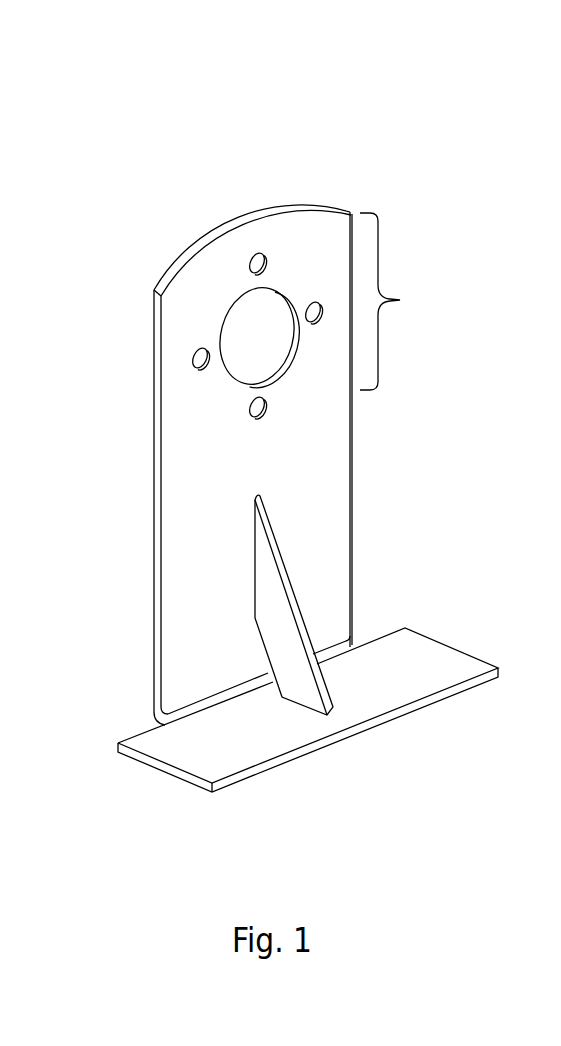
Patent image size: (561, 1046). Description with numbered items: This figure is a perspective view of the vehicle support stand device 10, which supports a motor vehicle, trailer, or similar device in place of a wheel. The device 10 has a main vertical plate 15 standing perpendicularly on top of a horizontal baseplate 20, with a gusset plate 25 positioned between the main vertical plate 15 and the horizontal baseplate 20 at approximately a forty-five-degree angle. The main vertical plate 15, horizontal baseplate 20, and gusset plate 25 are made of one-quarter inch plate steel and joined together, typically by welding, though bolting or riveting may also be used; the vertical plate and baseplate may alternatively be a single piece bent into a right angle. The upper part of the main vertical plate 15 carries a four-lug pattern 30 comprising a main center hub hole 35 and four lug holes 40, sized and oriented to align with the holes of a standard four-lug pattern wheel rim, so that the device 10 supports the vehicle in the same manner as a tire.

The vehicle support stand device 10 is at (76, 158).
The main vertical plate 15 is at (330, 435).
The horizontal baseplate 20 is at (192, 757).
The gusset plate 25 is at (272, 593).
The four-lug pattern 30 is at (396, 301).
The main center hub hole 35 is at (252, 337).
The lug holes 40 is at (258, 260).